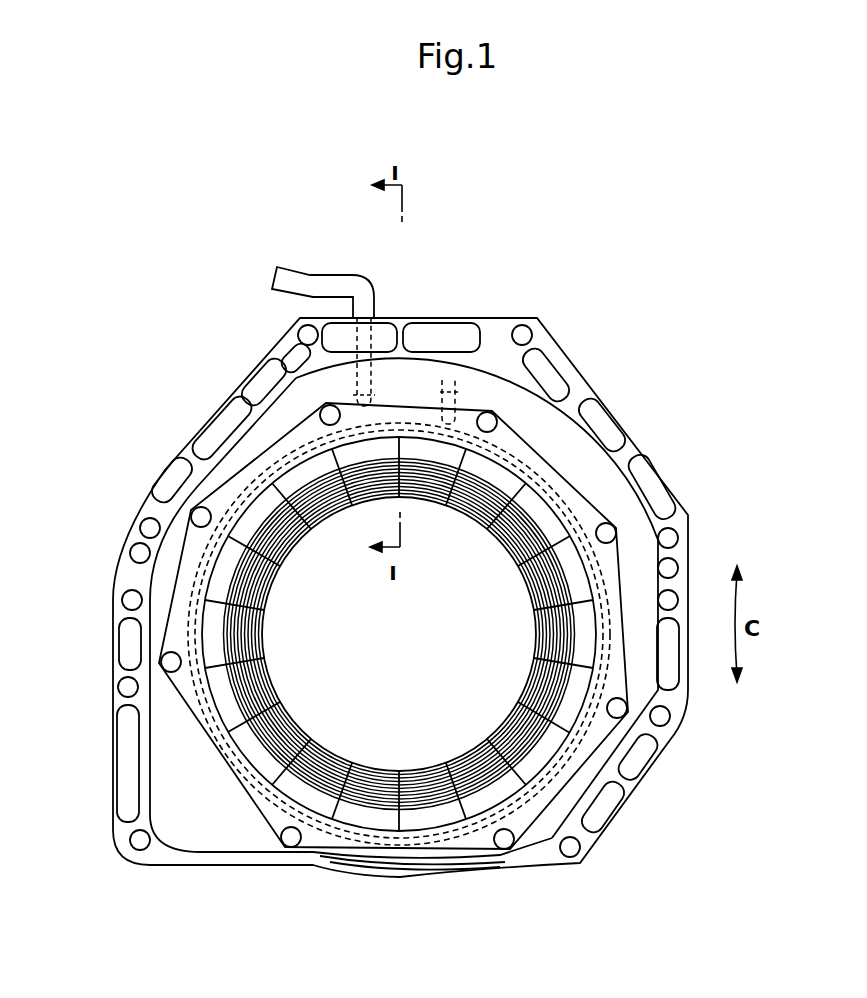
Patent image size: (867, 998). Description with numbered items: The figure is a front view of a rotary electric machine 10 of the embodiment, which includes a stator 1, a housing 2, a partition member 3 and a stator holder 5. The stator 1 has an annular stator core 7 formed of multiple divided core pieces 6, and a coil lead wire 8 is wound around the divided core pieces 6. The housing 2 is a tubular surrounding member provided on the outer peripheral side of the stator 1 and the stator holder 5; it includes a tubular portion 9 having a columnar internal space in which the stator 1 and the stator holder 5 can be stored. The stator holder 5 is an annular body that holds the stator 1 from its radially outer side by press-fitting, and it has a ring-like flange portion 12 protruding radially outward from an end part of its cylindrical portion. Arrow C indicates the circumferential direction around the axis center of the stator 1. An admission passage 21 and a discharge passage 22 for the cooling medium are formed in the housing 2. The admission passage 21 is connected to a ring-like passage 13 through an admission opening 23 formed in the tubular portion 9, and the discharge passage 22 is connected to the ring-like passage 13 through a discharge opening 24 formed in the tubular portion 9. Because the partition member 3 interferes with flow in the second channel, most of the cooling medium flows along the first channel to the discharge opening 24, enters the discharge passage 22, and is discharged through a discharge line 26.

The stator 1 is at (494, 545).
The housing 2 is at (634, 426).
The partition member 3 is at (360, 455).
The stator holder 5 is at (622, 668).
The divided core pieces 6 is at (412, 838).
The stator core 7 is at (455, 862).
The coil lead wire 8 is at (418, 795).
The tubular portion 9 is at (590, 742).
The rotary electric machine 10 is at (648, 302).
The flange portion 12 is at (176, 596).
The ring-like passage 13 is at (232, 497).
The admission passage 21 is at (462, 385).
The discharge passage 22 is at (445, 420).
The admission opening 23 is at (452, 395).
The discharge opening 24 is at (363, 412).
The discharge line 26 is at (302, 268).